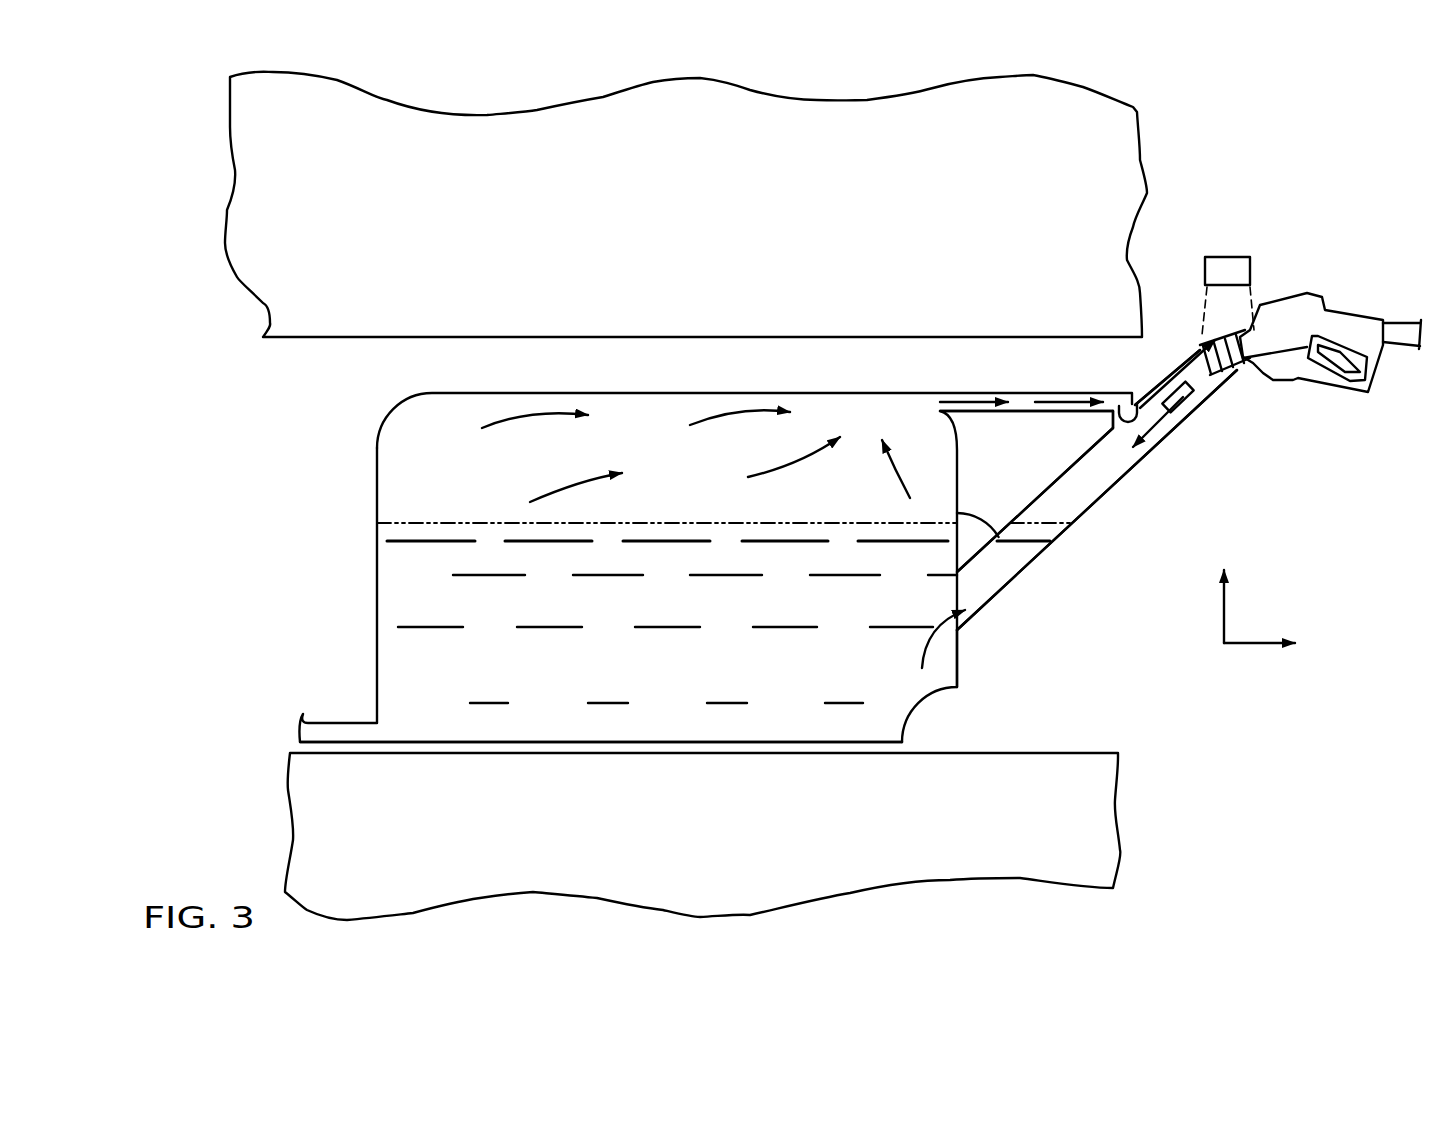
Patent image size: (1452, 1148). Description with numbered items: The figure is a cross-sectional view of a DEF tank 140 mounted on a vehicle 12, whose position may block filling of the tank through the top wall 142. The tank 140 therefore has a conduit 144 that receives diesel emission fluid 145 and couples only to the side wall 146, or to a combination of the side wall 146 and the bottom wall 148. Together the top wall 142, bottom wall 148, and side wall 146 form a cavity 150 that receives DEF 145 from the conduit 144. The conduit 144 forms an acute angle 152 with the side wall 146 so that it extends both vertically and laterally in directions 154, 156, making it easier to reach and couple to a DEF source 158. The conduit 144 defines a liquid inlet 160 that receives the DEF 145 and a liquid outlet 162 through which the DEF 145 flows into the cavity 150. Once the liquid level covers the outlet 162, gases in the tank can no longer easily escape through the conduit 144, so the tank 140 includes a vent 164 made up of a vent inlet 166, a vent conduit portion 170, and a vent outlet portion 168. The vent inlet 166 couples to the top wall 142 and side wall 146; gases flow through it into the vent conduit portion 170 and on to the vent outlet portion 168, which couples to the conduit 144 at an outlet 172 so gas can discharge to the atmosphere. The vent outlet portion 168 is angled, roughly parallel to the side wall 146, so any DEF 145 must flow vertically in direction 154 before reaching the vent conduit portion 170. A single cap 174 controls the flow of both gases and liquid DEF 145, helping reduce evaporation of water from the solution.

The vehicle 12 is at (624, 201).
The DEF tank 140 is at (1142, 594).
The top wall 142 is at (582, 393).
The conduit 144 is at (1133, 470).
The diesel emission fluid (DEF) 145 is at (538, 674).
The side wall 146 is at (957, 657).
The bottom wall 148 is at (600, 742).
The cavity 150 is at (540, 477).
The acute angle 152 is at (985, 512).
The vertical direction 154 is at (1224, 612).
The lateral direction 156 is at (1253, 645).
The DEF source 158 is at (1310, 303).
The liquid inlet 160 is at (1228, 375).
The liquid outlet 162 is at (934, 656).
The vent 164 is at (937, 360).
The vent inlet 166 is at (893, 388).
The vent outlet portion 168 is at (1150, 377).
The vent conduit portion 170 is at (1042, 412).
The outlet 172 is at (1105, 420).
The cap 174 is at (1228, 257).